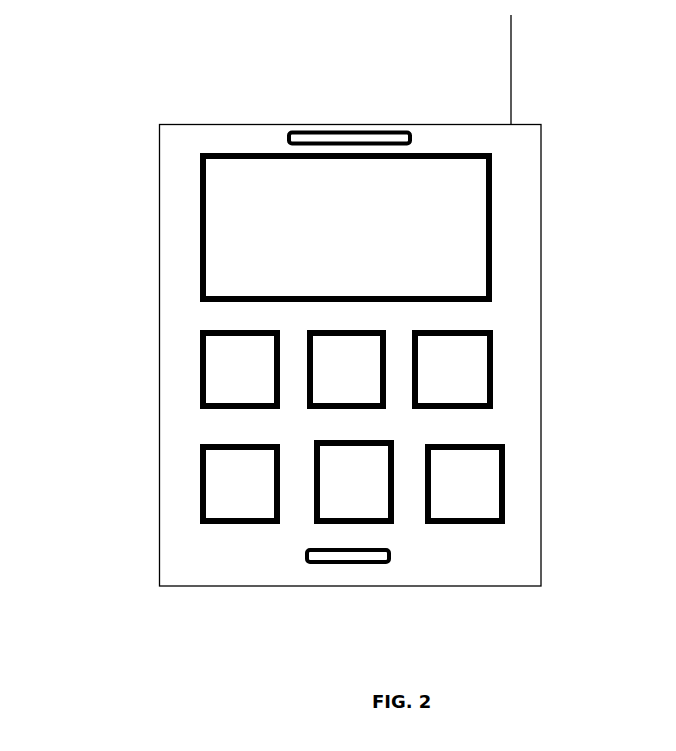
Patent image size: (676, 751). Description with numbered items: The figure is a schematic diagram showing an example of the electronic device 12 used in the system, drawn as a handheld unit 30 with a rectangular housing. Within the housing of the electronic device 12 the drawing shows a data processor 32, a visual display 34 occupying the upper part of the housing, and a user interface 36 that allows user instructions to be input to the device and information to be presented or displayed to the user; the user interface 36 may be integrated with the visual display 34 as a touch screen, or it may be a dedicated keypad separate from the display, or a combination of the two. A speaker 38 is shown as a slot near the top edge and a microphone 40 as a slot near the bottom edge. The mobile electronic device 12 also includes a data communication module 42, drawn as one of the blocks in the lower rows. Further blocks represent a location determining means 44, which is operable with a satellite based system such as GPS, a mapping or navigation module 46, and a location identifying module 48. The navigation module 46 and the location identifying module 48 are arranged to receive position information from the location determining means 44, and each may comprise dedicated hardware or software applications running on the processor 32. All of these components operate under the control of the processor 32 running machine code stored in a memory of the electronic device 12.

The electronic device 12 is at (159, 235).
The handheld device 30 is at (232, 641).
The data processor 32 is at (335, 362).
The visual display 34 is at (350, 203).
The user interface 36 is at (220, 360).
The speaker 38 is at (303, 128).
The microphone 40 is at (334, 567).
The data communication module 42 is at (350, 481).
The location determining means 44 is at (237, 465).
The mapping or navigation module 46 is at (475, 359).
The location identifying module 48 is at (475, 482).